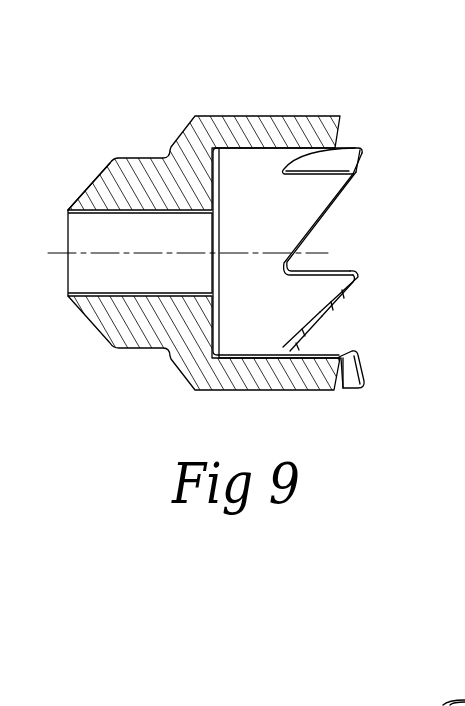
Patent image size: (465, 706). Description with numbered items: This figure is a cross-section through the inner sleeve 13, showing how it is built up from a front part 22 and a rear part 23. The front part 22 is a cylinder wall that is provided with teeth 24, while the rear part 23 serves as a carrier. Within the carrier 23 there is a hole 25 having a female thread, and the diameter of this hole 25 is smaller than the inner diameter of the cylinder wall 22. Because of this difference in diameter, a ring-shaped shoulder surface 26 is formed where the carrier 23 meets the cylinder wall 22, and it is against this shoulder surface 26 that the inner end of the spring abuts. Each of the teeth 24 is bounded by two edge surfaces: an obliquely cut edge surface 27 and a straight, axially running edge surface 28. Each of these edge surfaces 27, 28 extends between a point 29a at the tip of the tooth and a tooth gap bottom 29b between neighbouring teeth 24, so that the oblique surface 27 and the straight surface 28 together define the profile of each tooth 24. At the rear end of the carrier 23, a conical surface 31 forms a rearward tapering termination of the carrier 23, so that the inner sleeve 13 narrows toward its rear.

The inner sleeve 13 is at (212, 83).
The front part 22 is at (280, 113).
The rear part 23 is at (149, 176).
The teeth 24 is at (378, 131).
The hole 25 is at (87, 237).
The ring-shaped shoulder surface 26 is at (213, 175).
The obliquely cut edge surface 27 is at (321, 327).
The straight, axially running edge surface 28 is at (338, 268).
The point 29a is at (357, 277).
The tooth gap bottom 29b is at (290, 337).
The conical surface 31 is at (92, 182).